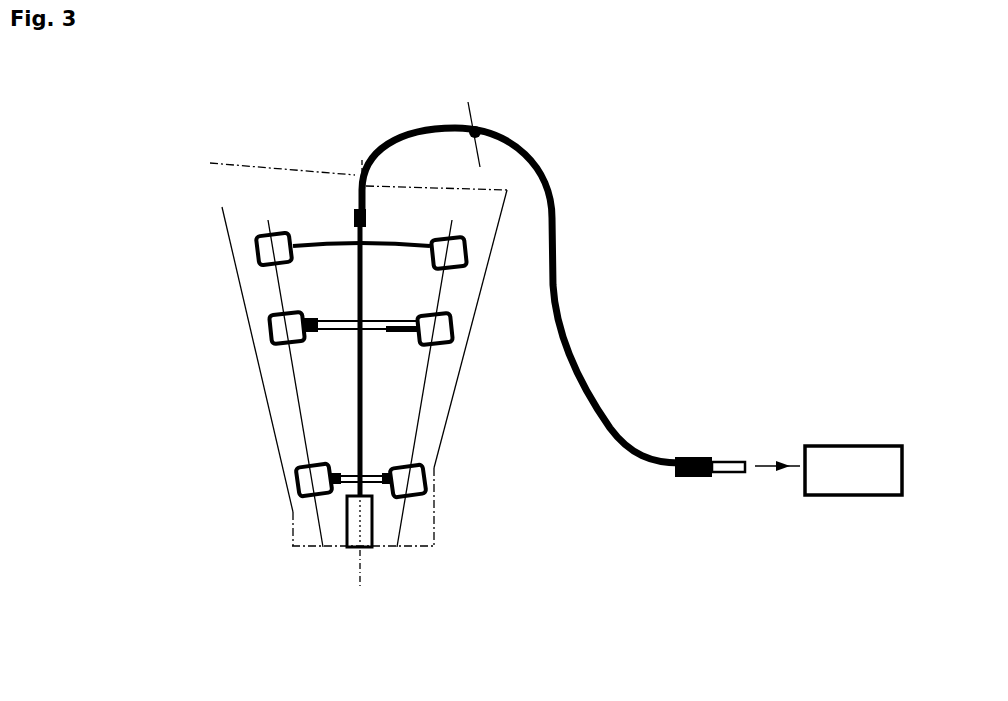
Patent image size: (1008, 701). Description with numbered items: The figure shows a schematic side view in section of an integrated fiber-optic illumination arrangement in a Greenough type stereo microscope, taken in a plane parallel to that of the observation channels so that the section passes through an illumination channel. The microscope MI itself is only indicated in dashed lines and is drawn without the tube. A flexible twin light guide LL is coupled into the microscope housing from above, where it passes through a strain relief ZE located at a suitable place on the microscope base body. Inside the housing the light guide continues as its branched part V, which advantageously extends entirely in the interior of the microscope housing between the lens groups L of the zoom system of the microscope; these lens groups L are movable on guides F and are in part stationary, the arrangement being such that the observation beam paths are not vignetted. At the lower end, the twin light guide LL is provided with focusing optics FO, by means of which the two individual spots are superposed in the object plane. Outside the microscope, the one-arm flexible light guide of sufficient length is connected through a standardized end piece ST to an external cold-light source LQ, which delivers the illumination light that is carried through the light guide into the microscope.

The microscope MI is at (222, 207).
The lens groups L is at (431, 241).
The guides F is at (365, 363).
The branch V is at (362, 413).
The focusing optics FO is at (360, 527).
The twin light guide LL is at (368, 197).
The strain relief ZE is at (482, 131).
The standardized end piece ST is at (685, 478).
The cold-light source LQ is at (860, 477).